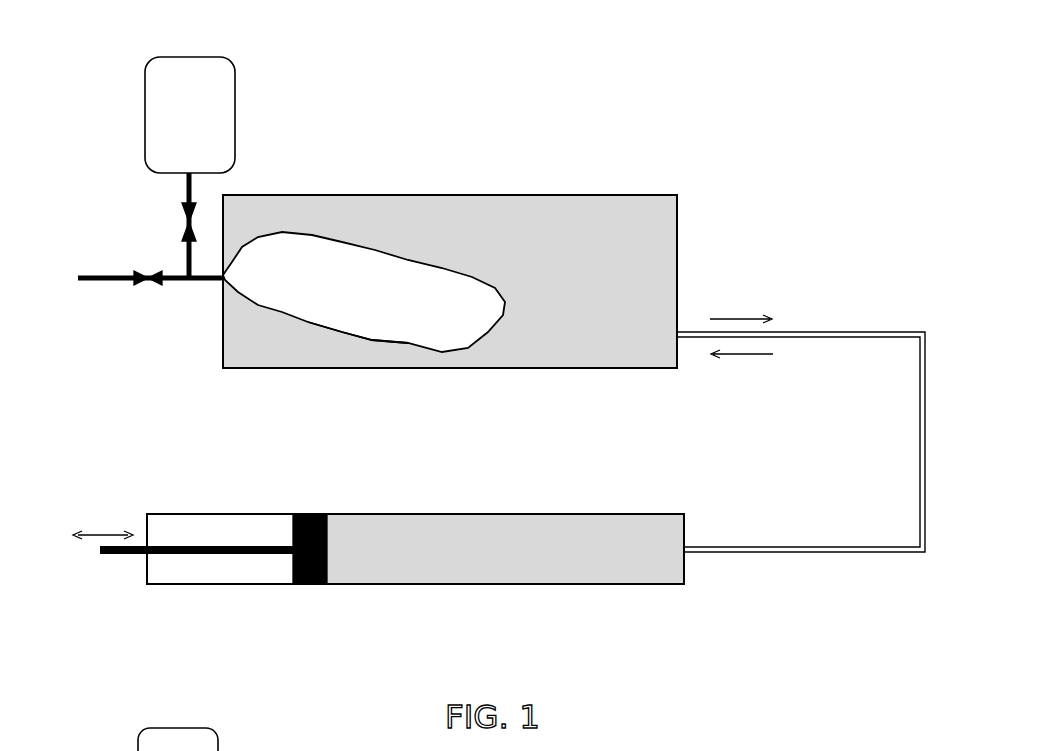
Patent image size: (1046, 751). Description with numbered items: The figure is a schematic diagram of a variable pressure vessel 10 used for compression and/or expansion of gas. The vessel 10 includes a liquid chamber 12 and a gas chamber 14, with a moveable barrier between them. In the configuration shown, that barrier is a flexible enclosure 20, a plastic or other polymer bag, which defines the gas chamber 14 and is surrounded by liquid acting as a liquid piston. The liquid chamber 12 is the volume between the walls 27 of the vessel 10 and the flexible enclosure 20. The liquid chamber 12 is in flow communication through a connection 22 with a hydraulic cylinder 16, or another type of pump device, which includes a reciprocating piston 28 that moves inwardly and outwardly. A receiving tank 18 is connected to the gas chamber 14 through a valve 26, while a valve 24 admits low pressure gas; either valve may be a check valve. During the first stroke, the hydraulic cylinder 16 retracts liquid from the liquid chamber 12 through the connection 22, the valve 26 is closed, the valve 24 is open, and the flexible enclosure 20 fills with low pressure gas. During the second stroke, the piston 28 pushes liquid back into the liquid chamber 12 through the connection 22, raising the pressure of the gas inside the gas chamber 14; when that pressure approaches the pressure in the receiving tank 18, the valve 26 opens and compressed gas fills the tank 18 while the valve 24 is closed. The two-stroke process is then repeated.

The variable pressure vessel 10 is at (560, 372).
The liquid chamber 12 is at (568, 212).
The gas chamber 14 is at (452, 318).
The hydraulic cylinder 16 is at (515, 513).
The receiving tank 18 is at (236, 105).
The flexible enclosure 20 is at (368, 342).
The connection 22 is at (870, 332).
The valve 24 is at (163, 283).
The valve 26 is at (188, 222).
The walls 27 is at (422, 195).
The reciprocating piston 28 is at (318, 513).